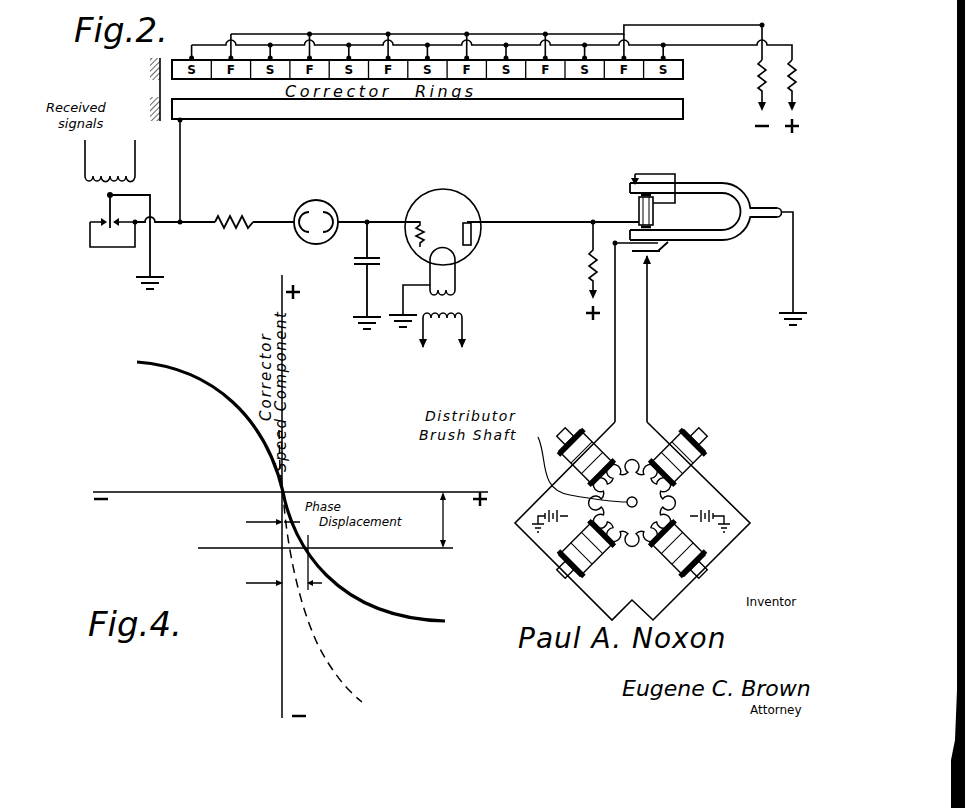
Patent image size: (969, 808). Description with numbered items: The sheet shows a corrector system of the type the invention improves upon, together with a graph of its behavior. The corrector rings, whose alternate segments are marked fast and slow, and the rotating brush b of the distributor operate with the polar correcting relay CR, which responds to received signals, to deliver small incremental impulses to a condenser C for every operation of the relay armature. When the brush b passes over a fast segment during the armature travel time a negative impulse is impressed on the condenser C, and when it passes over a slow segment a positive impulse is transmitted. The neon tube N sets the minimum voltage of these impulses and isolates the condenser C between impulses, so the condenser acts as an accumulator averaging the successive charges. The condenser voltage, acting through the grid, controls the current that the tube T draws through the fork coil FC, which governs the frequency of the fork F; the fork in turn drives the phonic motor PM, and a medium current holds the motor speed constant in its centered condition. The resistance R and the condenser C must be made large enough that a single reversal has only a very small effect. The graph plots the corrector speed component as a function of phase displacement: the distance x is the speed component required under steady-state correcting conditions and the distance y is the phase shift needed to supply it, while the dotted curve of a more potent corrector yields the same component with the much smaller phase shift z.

In FIG. 2, the rotating brush b is at (145, 89).
In FIG. 2, the polar correcting relay CR is at (124, 214).
In FIG. 2, the resistance R is at (234, 206).
In FIG. 2, the neon tube N is at (316, 208).
In FIG. 2, the condenser C is at (358, 275).
In FIG. 2, the tube T is at (435, 263).
In FIG. 2, the fork F is at (710, 291).
In FIG. 2, the fork coil FC is at (664, 202).
In FIG. 2, the phonic motor PM is at (639, 519).
In FIG. 4, the corrector speed component x is at (447, 520).
In FIG. 4, the phase shift y is at (273, 565).
In FIG. 4, the phase shift with more potent corrector z is at (263, 522).